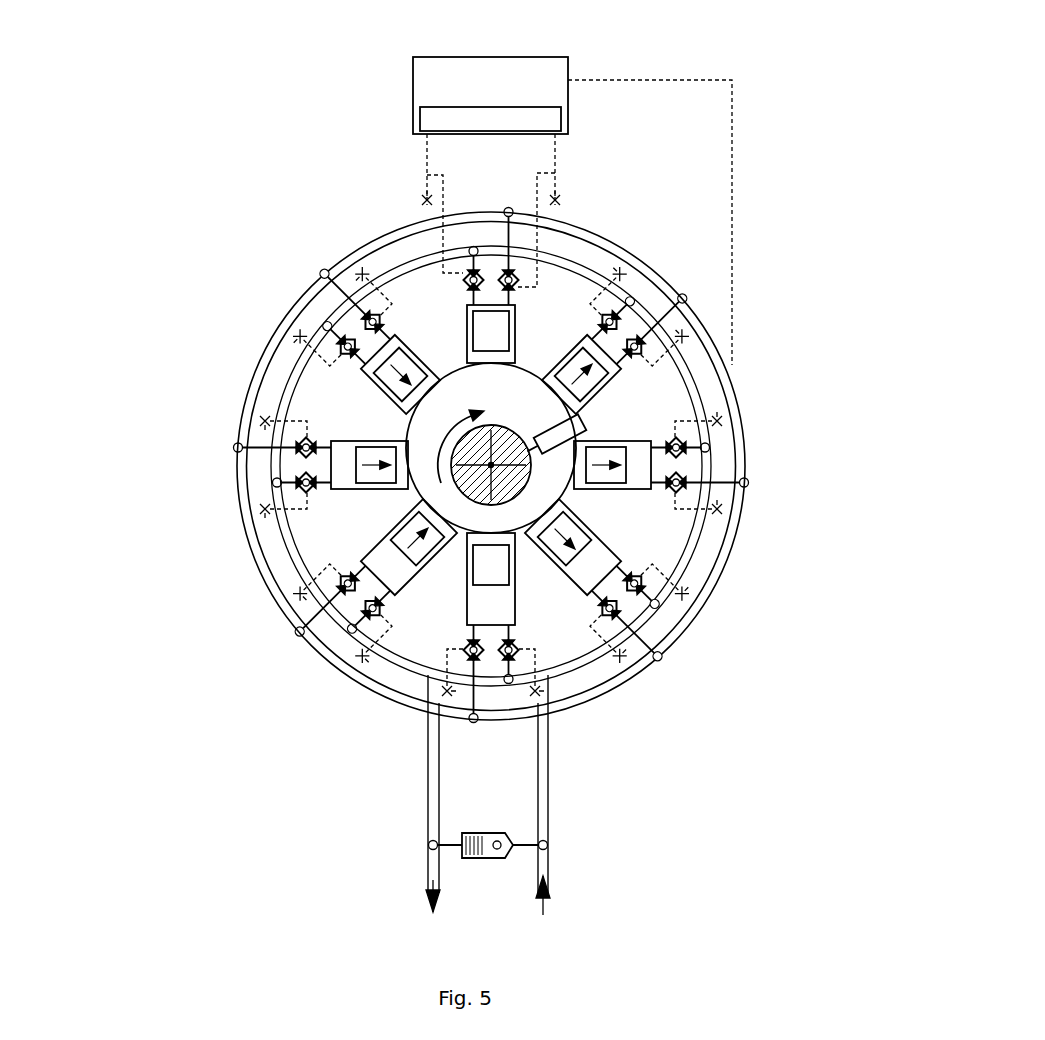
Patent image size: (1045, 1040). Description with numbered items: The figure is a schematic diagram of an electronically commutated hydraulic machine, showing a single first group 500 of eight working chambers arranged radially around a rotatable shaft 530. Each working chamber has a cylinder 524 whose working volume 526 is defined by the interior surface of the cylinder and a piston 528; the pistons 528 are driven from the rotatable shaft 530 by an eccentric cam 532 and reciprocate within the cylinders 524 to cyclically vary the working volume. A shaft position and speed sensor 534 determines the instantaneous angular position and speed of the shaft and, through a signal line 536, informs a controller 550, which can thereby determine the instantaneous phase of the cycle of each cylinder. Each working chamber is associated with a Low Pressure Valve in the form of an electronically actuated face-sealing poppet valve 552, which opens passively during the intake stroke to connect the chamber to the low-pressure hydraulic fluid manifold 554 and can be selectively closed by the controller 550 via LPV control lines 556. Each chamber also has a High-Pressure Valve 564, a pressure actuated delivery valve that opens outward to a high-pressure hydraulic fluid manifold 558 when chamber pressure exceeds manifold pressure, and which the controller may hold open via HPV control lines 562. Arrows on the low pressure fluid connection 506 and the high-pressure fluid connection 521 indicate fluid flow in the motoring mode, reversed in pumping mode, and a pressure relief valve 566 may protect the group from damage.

The first group 500 is at (170, 146).
The low pressure fluid connection 506 is at (428, 873).
The high-pressure fluid connection 521 is at (550, 880).
The cylinders 524 is at (378, 532).
The working volumes 526 is at (343, 433).
The pistons 528 is at (345, 497).
The rotatable shaft 530 is at (500, 483).
The eccentric cam 532 is at (365, 272).
The shaft position and speed sensor 534 is at (572, 410).
The signal line 536 is at (732, 134).
The controller 550 is at (490, 95).
The electronically actuated face-sealing poppet valves 552 is at (462, 388).
The low-pressure hydraulic fluid manifold 554 is at (680, 577).
The LPV control lines 556 is at (427, 168).
The high-pressure hydraulic fluid manifold 558 is at (237, 473).
The HPV control lines 562 is at (565, 167).
The High-Pressure Valve 564 is at (327, 276).
The pressure relief valve 566 is at (460, 835).